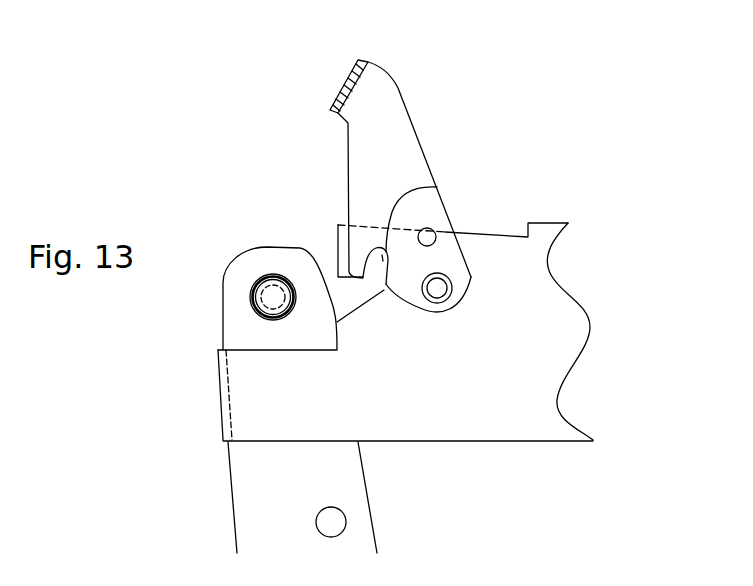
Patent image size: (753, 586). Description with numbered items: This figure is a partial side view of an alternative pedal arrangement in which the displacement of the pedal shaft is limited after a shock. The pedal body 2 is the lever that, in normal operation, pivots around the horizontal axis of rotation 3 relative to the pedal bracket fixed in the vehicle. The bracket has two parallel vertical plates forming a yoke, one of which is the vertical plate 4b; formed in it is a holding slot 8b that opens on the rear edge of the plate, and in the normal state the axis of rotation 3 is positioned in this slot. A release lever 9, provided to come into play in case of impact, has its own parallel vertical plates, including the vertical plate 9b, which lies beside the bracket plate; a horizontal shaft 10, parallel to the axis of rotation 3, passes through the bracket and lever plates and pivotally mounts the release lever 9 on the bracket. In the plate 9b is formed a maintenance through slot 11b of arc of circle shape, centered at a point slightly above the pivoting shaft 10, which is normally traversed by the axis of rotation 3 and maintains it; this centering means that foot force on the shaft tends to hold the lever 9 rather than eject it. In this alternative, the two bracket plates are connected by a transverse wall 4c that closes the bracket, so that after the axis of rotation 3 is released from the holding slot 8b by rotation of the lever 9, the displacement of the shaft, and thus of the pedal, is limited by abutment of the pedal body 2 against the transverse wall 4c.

The pedal body 2 is at (250, 518).
The axis of rotation 3 is at (273, 297).
The vertical plate 4b is at (460, 430).
The transverse wall 4c is at (223, 390).
The holding slot 8b is at (383, 286).
The release lever 9 is at (404, 87).
The vertical plate 9b is at (403, 150).
The horizontal shaft 10 is at (437, 288).
The maintenance through slot 11b is at (437, 187).